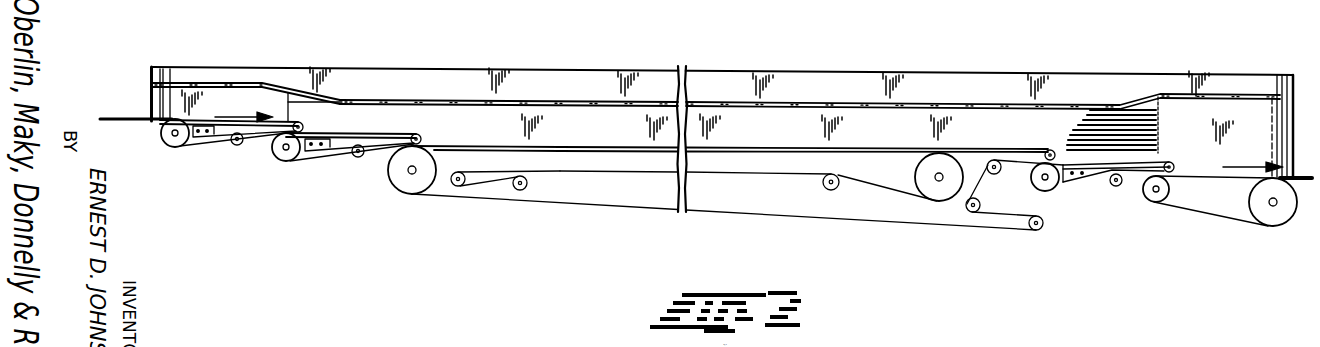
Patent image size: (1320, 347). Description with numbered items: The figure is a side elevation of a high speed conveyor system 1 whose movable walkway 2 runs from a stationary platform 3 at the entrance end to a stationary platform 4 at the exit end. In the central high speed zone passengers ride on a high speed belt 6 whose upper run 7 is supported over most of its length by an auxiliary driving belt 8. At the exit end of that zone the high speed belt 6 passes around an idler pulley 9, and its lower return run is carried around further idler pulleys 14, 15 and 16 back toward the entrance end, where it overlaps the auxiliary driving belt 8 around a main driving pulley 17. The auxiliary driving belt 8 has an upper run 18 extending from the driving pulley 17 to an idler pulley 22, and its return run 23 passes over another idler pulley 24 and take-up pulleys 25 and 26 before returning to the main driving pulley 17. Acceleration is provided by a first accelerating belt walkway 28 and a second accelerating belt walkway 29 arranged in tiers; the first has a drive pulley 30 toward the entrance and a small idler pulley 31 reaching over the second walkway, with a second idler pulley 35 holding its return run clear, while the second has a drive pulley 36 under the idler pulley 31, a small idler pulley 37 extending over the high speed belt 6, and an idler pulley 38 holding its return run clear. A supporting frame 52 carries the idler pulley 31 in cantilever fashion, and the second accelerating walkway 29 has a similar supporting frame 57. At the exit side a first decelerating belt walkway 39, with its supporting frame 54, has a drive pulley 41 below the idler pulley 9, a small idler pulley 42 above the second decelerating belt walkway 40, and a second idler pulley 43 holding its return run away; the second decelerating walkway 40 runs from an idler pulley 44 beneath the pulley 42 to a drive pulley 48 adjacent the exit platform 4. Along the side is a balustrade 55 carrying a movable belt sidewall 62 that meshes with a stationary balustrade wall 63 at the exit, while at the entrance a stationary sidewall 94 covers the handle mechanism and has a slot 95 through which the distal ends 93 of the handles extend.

The conveyor system 1 is at (856, 71).
The movable walkway 2 is at (591, 147).
The stationary platform 3 is at (130, 118).
The stationary platform 4 is at (1302, 178).
The high speed belt 6 is at (455, 148).
The upper run 7 is at (967, 149).
The auxiliary driving belt 8 is at (765, 153).
The idler pulley 9 is at (1052, 150).
The idler pulley 14 is at (990, 160).
The idler pulley 15 is at (964, 211).
The idler pulley 16 is at (1043, 228).
The main driving pulley 17 is at (397, 183).
The upper run 18 is at (718, 153).
The idler pulley 22 is at (930, 165).
The return run 23 is at (876, 195).
The idler pulley 24 is at (832, 190).
The take-up pulley 25 is at (458, 187).
The take-up pulley 26 is at (520, 190).
The first accelerating belt walkway 28 is at (197, 150).
The second accelerating belt walkway 29 is at (318, 153).
The drive pulley 30 is at (160, 134).
The idler pulley 31 is at (304, 127).
The second idler pulley 35 is at (234, 146).
The drive pulley 36 is at (281, 163).
The idler pulley 37 is at (421, 135).
The idler pulley 38 is at (353, 158).
The first decelerating belt walkway 39 is at (1084, 176).
The second decelerating belt walkway 40 is at (1210, 218).
The drive pulley 41 is at (1032, 183).
The idler pulley 42 is at (1170, 162).
The second idler pulley 43 is at (1113, 187).
The idler pulley 44 is at (1151, 201).
The drive pulley 48 is at (1268, 215).
The supporting frame 52 is at (206, 128).
The supporting frame 54 is at (1073, 181).
The balustrade 55 is at (1162, 74).
The supporting frame 57 is at (332, 136).
The movable belt sidewall 62 is at (738, 113).
The stationary balustrade wall 63 is at (1224, 108).
The distal ends 93 is at (525, 100).
The stationary sidewall 94 is at (153, 76).
The slot 95 is at (239, 83).